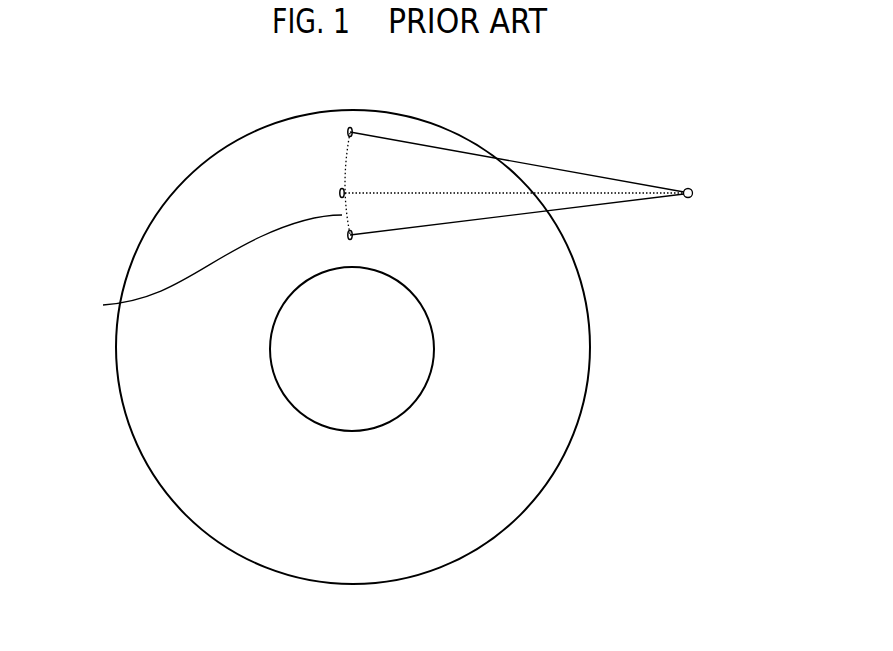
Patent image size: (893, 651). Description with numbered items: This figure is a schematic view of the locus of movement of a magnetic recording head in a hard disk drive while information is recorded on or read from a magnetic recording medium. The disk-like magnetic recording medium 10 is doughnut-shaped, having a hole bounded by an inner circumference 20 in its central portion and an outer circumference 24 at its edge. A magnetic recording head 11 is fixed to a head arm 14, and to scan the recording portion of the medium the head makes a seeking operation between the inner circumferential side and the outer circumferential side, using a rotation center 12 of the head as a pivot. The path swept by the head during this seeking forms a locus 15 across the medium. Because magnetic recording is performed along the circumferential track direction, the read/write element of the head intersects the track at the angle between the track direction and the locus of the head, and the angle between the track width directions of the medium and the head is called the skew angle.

The magnetic recording medium 10 is at (171, 233).
The magnetic recording head 11 is at (349, 132).
The rotation center 12 is at (705, 194).
The head arm 14 is at (460, 149).
The locus 15 is at (207, 267).
The inner circumference 20 is at (407, 412).
The outer circumference 24 is at (570, 452).